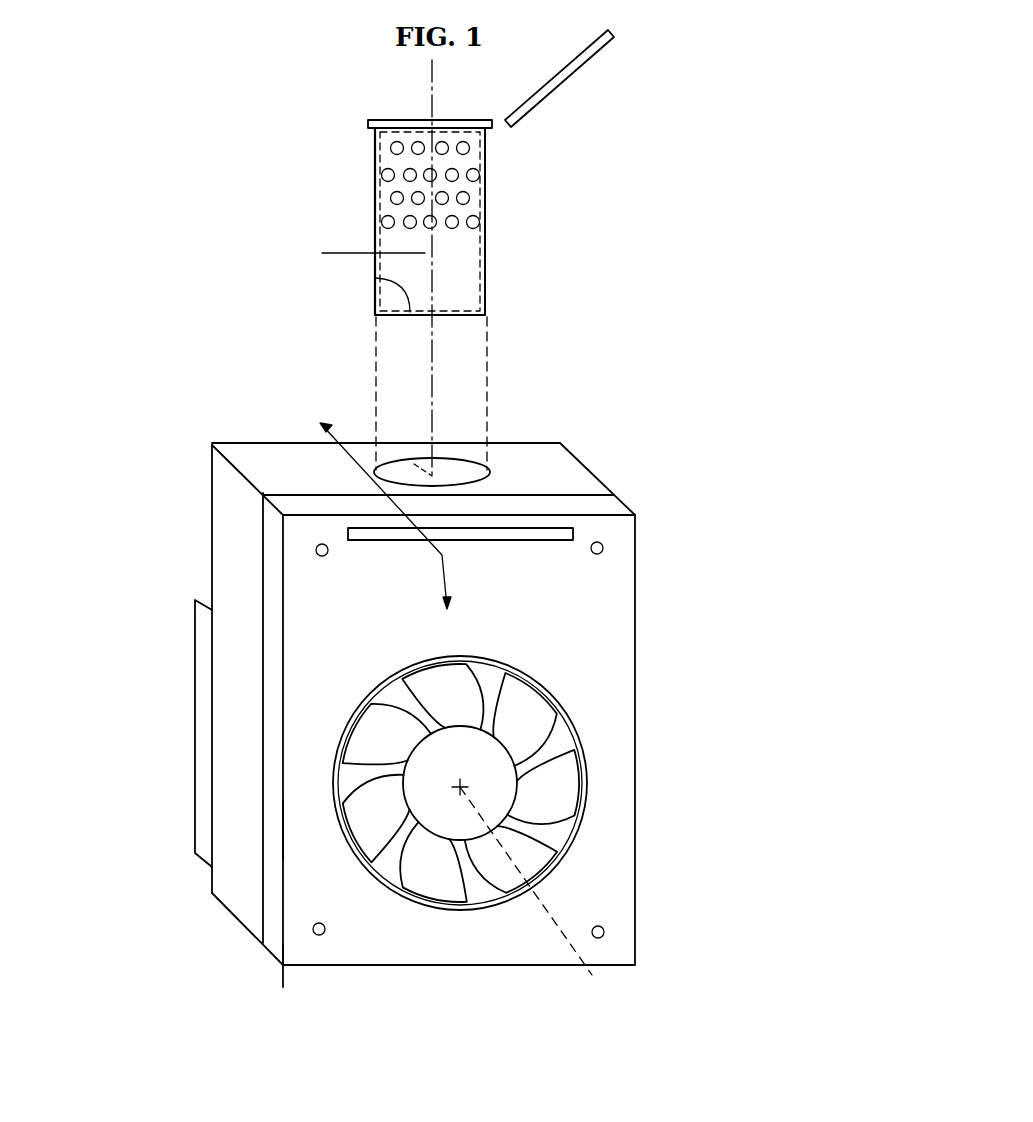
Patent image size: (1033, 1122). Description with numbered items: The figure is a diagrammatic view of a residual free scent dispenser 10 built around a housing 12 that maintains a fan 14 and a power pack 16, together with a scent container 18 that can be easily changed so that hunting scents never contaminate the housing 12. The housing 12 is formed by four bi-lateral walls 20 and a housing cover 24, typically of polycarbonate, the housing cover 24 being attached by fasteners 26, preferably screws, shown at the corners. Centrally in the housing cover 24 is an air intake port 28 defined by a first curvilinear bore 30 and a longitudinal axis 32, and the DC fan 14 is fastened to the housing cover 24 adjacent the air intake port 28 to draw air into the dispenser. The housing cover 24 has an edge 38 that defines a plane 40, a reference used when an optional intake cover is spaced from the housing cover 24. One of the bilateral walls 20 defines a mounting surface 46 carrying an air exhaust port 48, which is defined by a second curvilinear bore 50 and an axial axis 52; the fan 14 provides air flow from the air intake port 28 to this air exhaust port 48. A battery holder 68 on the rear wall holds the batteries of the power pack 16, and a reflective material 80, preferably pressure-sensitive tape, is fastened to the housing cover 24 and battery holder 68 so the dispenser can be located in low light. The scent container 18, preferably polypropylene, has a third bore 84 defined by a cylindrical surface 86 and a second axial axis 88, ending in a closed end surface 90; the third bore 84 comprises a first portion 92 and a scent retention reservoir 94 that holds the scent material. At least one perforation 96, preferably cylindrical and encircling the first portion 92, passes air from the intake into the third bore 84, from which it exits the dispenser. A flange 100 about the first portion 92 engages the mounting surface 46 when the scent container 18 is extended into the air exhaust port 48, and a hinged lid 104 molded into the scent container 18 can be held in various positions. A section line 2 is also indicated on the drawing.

The section line 2- 2 is at (392, 506).
The residual free scent dispenser 10 is at (141, 379).
The housing 12 is at (238, 520).
The fan 14 is at (495, 788).
The power pack 16 is at (171, 708).
The scent container 18 is at (367, 180).
The bi-lateral walls 20 is at (260, 458).
The housing cover 24 is at (298, 773).
The fasteners 26 is at (316, 550).
The air intake port 28 is at (580, 825).
The first curvilinear bore 30 is at (488, 890).
The longitudinal axis 32 is at (592, 972).
The edge 38 is at (284, 843).
The plane 40 is at (278, 970).
The mounting surface 46 is at (562, 462).
The air exhaust port 48 is at (470, 477).
The second curvilinear bore 50 is at (414, 464).
The axial axis 52 is at (373, 349).
The battery holder 68 is at (198, 647).
The reflective material 80 is at (355, 532).
The third bore 84 is at (398, 114).
The cylindrical surface 86 is at (478, 136).
The second axial axis 88 is at (322, 253).
The closed end surface 90 is at (376, 278).
The first portion 92 is at (449, 158).
The scent retention reservoir 94 is at (492, 235).
The perforation 96 is at (470, 147).
The flange 100 is at (373, 132).
The lid 104 is at (560, 83).